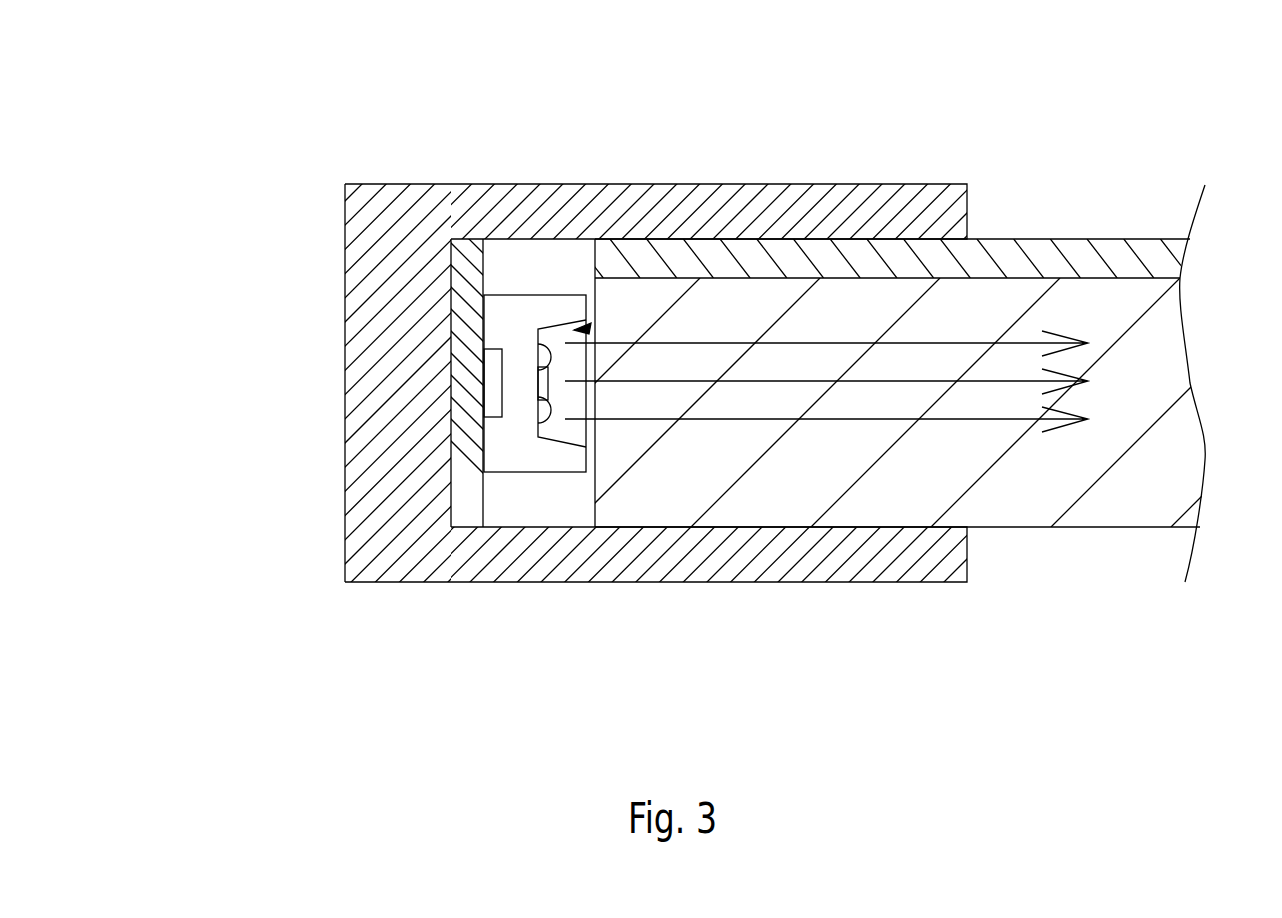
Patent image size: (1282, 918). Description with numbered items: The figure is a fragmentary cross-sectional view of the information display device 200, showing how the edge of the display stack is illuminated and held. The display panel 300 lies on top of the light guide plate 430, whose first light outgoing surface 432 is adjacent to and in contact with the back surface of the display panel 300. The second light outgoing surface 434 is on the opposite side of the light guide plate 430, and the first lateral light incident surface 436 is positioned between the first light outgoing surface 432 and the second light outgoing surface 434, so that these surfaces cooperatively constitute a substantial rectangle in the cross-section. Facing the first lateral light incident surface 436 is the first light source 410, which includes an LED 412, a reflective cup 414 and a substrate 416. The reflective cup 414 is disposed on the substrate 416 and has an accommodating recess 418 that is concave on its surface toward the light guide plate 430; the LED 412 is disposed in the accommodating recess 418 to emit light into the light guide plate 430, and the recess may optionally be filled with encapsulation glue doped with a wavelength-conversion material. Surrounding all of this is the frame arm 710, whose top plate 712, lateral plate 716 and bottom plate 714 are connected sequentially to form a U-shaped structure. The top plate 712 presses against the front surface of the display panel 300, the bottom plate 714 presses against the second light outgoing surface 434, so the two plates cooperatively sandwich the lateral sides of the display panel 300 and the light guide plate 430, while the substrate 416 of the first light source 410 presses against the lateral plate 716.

The information display device 200 is at (253, 76).
The display panel 300 is at (866, 409).
The first light source 410 is at (534, 404).
The LED 412 is at (548, 383).
The reflective cup 414 is at (541, 300).
The substrate 416 is at (498, 241).
The accommodating recess 418 is at (586, 328).
The light guide plate 430 is at (866, 424).
The first light outgoing surface 432 is at (923, 278).
The second light outgoing surface 434 is at (1012, 528).
The first lateral light incident surface 436 is at (596, 467).
The frame arm 710 is at (641, 395).
The top plate 712 is at (780, 205).
The bottom plate 714 is at (722, 562).
The lateral plate 716 is at (343, 330).